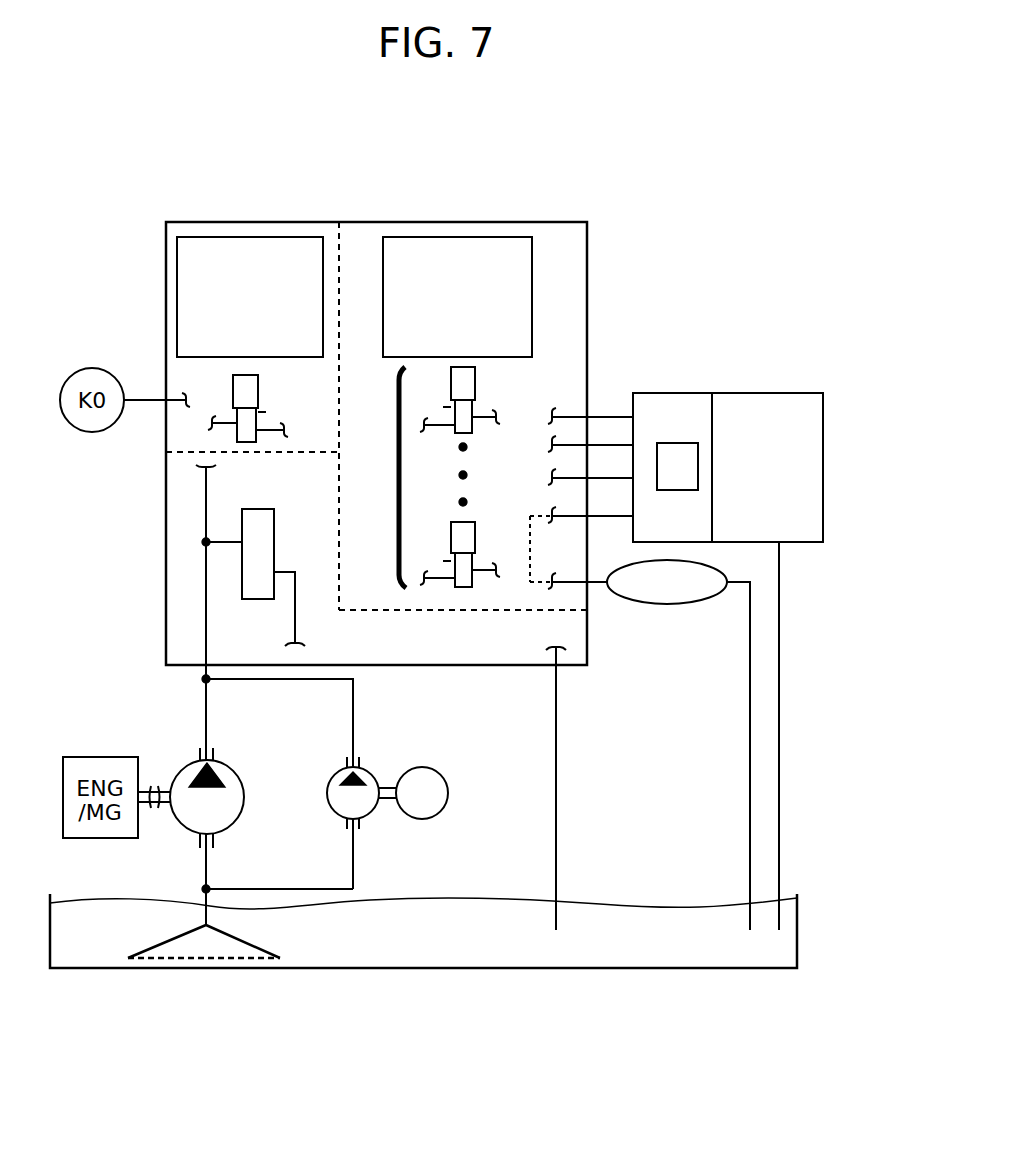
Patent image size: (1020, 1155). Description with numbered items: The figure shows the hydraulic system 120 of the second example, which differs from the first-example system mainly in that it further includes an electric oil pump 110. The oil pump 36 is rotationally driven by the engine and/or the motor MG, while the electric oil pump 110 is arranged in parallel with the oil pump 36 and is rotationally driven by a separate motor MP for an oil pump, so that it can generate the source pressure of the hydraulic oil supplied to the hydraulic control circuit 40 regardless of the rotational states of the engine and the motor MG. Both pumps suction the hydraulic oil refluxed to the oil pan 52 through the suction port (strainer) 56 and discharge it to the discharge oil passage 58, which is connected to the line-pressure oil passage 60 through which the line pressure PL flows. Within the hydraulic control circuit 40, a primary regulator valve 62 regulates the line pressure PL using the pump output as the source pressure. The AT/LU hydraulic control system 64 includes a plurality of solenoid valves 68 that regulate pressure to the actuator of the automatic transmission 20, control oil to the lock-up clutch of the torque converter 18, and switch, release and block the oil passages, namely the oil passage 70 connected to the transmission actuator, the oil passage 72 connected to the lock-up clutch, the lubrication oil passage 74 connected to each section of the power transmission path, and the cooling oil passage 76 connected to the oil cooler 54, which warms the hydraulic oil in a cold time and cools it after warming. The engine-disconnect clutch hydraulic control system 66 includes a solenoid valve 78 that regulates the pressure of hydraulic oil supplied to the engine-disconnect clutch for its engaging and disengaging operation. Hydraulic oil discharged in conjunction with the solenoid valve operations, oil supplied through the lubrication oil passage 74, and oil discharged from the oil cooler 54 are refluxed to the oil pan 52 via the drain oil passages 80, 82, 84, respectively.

The hydraulic system 120 is at (387, 388).
The hydraulic control circuit 40 is at (550, 222).
The K0 hydraulic control system 66 is at (260, 222).
The AT/LU hydraulic control system 64 is at (464, 222).
The solenoid valve 78 is at (243, 383).
The line-pressure oil passage 60 is at (206, 524).
The primary regulator valve 62 is at (268, 530).
The solenoid valves 68 is at (427, 477).
The oil passage 70 is at (572, 413).
The oil passage 72 is at (572, 441).
The lubrication oil passage 74 is at (572, 474).
The cooling oil passage 76 is at (572, 586).
The torque converter 18 is at (655, 400).
The automatic transmission 20 is at (756, 400).
The oil cooler 54 is at (660, 604).
The drain oil passage 84 is at (750, 661).
The drain oil passage 82 is at (779, 680).
The drain oil passage 80 is at (556, 698).
The discharge oil passage 58 is at (206, 703).
The oil pump 36 is at (222, 813).
The electric oil pump 110 is at (365, 806).
The suction port (strainer) 56 is at (220, 947).
The oil pan 52 is at (570, 968).